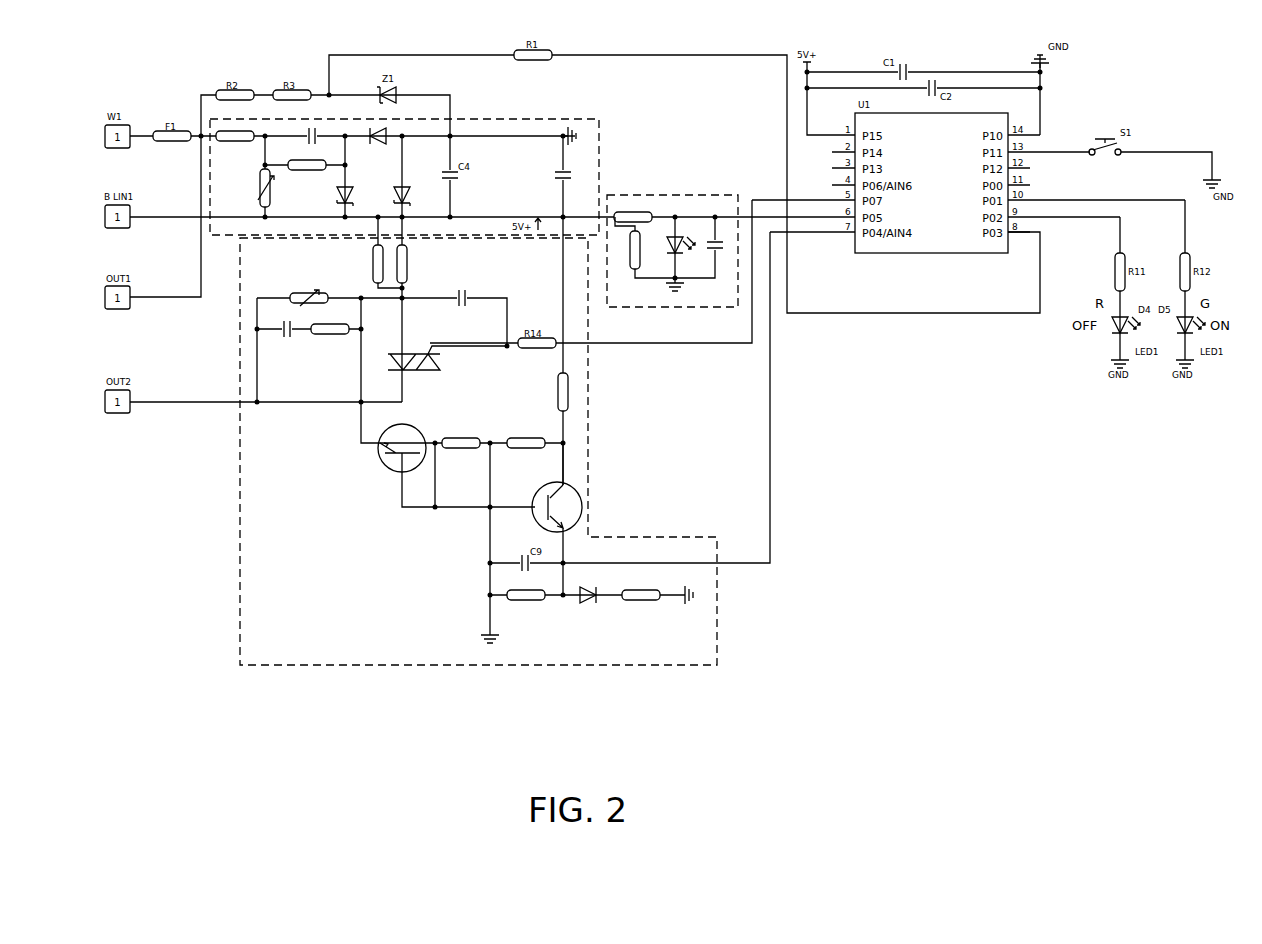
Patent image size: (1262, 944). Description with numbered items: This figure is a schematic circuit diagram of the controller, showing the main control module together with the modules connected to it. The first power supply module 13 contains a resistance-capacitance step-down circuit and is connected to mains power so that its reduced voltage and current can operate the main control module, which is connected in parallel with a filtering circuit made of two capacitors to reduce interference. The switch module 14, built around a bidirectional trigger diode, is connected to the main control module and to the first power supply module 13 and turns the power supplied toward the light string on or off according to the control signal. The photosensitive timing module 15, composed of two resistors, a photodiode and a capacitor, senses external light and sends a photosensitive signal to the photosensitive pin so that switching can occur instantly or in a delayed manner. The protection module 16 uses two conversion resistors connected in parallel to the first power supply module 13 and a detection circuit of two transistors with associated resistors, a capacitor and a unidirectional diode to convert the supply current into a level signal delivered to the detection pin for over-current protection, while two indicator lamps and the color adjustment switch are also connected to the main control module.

The first power supply module 13 is at (545, 120).
The switch module 14 is at (388, 392).
The photosensitive timing module 15 is at (693, 305).
The protection module 16 is at (387, 640).